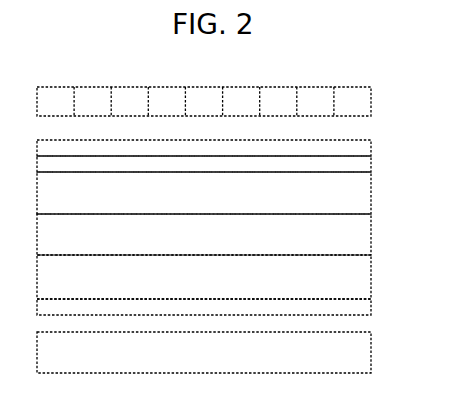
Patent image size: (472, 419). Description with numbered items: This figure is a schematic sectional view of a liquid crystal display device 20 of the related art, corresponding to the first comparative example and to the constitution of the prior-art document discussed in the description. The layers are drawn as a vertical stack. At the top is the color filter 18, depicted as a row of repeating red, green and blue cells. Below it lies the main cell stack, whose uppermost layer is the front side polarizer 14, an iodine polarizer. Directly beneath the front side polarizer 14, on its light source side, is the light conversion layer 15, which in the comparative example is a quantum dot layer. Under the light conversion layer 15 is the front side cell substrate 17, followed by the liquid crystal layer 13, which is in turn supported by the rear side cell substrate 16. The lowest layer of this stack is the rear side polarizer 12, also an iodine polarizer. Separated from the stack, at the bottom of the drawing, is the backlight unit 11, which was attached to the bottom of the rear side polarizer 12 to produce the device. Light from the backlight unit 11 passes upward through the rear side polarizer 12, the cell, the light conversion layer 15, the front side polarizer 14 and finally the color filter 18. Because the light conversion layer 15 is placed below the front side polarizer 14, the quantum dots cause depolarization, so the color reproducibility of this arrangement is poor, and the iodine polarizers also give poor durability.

The liquid crystal display device 20 is at (349, 70).
The color filter 18 is at (366, 101).
The front side polarizer 14 is at (362, 145).
The light conversion layer 15 is at (362, 163).
The front side cell substrate 17 is at (362, 193).
The liquid crystal layer 13 is at (360, 237).
The rear side cell substrate 16 is at (360, 276).
The rear side polarizer 12 is at (360, 306).
The backlight unit 11 is at (360, 354).